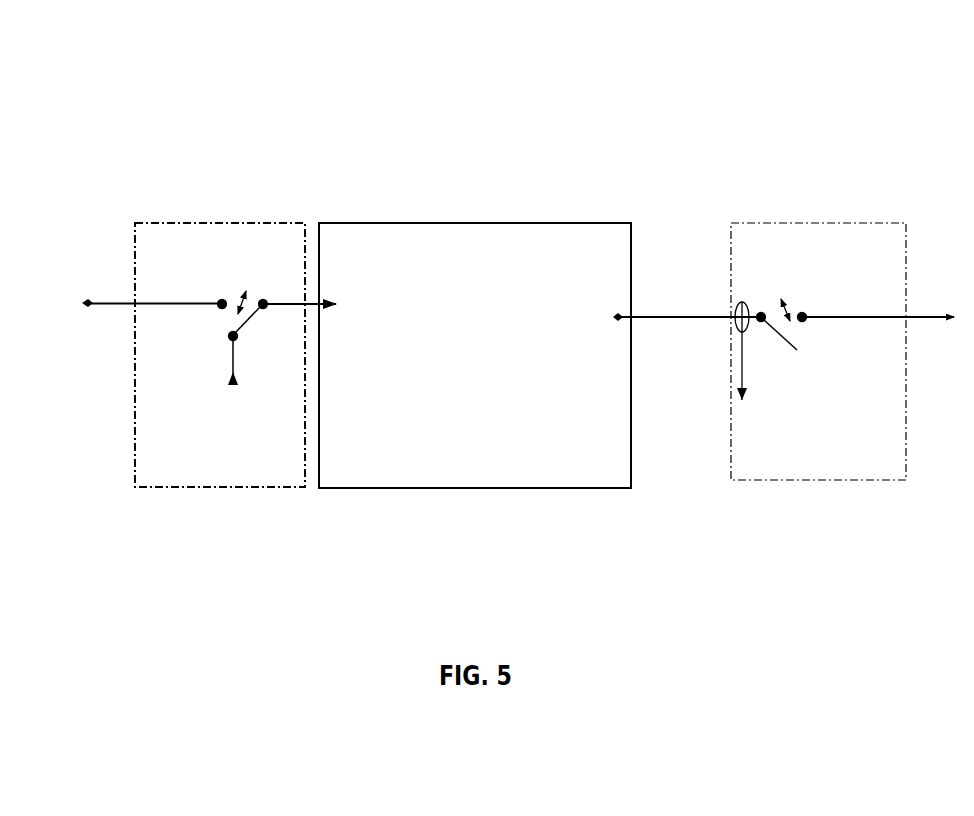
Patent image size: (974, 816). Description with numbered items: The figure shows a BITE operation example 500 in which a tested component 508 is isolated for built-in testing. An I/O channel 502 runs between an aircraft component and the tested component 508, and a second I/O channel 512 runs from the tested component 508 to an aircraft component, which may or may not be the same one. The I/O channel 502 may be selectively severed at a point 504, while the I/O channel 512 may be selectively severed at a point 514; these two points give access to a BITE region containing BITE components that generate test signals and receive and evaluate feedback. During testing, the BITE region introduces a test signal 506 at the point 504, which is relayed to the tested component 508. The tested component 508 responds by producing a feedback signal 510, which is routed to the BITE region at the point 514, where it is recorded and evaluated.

The BITE operation example 500 is at (136, 121).
The I/O channel 502 is at (105, 296).
The point 504 is at (254, 277).
The test signal 506 is at (228, 396).
The tested component 508 is at (520, 215).
The feedback signal 510 is at (716, 310).
The I/O channel 512 is at (816, 306).
The point 514 is at (801, 340).